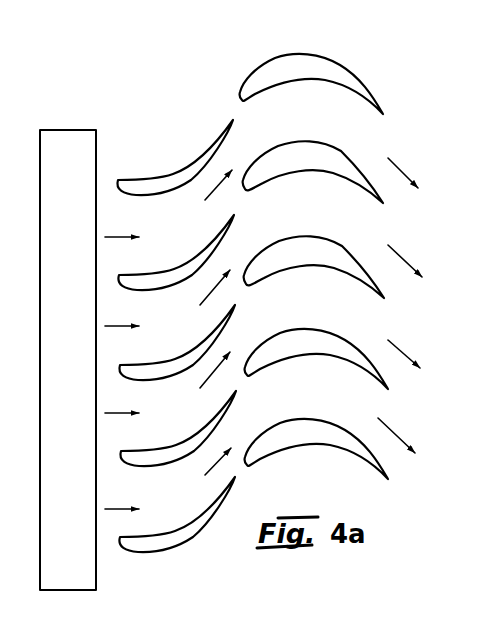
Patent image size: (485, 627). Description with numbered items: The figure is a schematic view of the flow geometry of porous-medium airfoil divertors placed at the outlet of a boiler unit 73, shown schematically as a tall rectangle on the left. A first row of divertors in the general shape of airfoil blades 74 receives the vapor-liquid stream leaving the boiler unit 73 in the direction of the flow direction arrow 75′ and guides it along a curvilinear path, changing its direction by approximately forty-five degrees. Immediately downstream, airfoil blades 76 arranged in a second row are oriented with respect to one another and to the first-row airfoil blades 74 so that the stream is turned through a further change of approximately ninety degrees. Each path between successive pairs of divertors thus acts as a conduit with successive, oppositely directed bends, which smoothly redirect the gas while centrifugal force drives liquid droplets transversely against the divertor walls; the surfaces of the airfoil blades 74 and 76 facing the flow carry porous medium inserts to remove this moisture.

The boiler unit 73 is at (72, 130).
The airfoil blades 74 is at (113, 182).
The flow direction arrow 75′ is at (118, 237).
The airfoil blades 76 is at (360, 85).